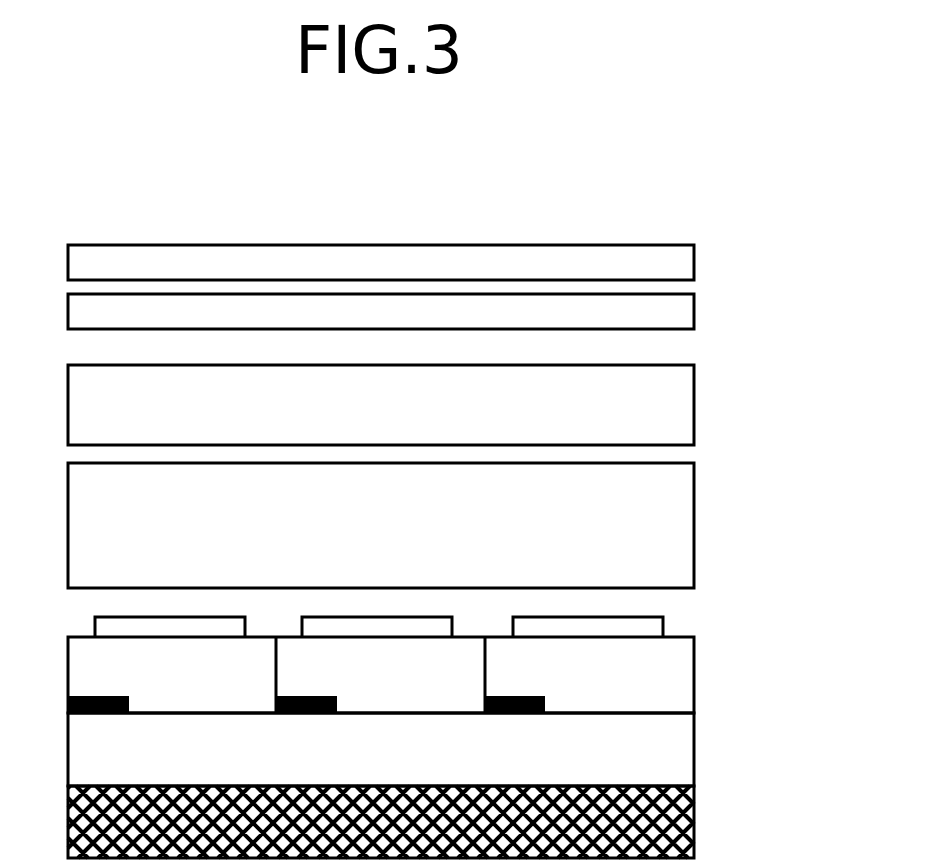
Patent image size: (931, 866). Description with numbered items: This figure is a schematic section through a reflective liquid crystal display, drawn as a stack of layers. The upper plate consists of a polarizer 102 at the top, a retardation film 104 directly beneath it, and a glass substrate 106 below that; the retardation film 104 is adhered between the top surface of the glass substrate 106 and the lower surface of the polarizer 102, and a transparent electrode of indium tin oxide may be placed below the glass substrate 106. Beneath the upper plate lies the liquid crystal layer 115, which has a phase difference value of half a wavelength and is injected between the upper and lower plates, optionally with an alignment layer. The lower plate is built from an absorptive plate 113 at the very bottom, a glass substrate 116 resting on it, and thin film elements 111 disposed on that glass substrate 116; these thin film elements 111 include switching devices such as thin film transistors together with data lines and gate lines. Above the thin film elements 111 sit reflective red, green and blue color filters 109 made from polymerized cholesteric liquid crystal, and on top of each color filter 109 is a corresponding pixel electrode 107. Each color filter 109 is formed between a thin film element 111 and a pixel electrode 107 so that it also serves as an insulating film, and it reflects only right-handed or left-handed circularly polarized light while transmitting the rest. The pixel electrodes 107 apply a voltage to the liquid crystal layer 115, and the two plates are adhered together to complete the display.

The polarizer 102 is at (694, 265).
The retardation film 104 is at (694, 310).
The glass substrate 106 is at (694, 403).
The liquid crystal layer 115 is at (694, 518).
The pixel electrode 107 is at (660, 622).
The reflective color filter 109 is at (694, 675).
The thin film element 111 is at (545, 700).
The glass substrate 116 is at (694, 753).
The absorptive plate 113 is at (694, 827).